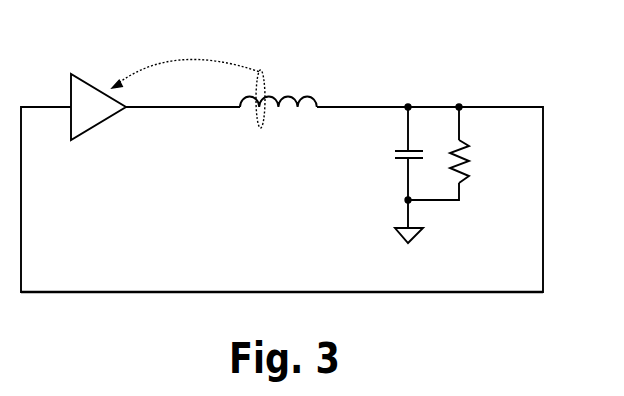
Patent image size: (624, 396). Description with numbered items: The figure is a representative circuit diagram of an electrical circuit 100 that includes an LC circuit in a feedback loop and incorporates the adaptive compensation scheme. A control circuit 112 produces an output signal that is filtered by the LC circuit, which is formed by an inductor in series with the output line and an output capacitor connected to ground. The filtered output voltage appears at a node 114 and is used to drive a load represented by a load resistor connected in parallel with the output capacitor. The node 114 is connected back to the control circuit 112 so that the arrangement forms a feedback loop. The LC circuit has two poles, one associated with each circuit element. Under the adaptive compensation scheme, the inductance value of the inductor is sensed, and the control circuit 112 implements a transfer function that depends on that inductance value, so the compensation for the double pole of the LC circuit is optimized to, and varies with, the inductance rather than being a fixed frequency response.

The electrical circuit 100 is at (308, 154).
The control circuit 112 is at (86, 132).
The node 114 is at (410, 105).